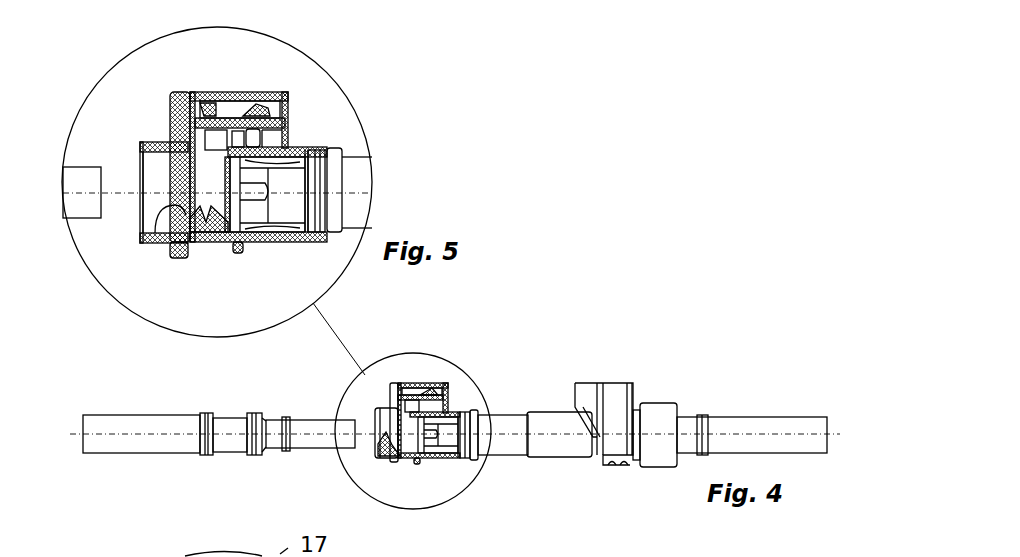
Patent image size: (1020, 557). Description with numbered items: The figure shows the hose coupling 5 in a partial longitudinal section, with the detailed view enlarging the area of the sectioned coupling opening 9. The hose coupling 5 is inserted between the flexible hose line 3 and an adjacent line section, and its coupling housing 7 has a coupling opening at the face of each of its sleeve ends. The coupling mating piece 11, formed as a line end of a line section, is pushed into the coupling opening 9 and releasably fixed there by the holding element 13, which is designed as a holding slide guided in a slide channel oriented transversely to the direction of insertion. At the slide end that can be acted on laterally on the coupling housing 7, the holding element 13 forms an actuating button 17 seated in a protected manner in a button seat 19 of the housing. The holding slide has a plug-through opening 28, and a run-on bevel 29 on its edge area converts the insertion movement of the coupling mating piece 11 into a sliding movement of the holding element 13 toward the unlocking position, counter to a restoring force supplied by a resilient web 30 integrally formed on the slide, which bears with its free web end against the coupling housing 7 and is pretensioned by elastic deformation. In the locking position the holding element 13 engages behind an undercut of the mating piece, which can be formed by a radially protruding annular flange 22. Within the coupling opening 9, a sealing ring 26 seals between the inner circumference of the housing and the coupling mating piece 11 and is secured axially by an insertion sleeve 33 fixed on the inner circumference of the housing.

In FIG. 4, the flexible hose line 3 is at (138, 455).
In FIG. 5, the hose coupling 5 is at (322, 100).
In FIG. 4, the hose coupling 5 is at (528, 382).
In FIG. 4, the coupling housing 7 is at (510, 457).
In FIG. 5, the coupling opening 9 is at (128, 165).
In FIG. 4, the coupling opening 9 is at (352, 405).
In FIG. 5, the coupling mating piece 11 is at (85, 212).
In FIG. 4, the coupling mating piece 11 is at (318, 448).
In FIG. 5, the holding element 13 is at (168, 110).
In FIG. 4, the holding element 13 is at (380, 417).
In FIG. 5, the actuating button 17 is at (230, 96).
In FIG. 4, the actuating button 17 is at (418, 388).
In FIG. 5, the button seat 19 is at (292, 120).
In FIG. 4, the button seat 19 is at (402, 408).
In FIG. 4, the annular flange 22 is at (285, 417).
In FIG. 5, the sealing ring 26 is at (312, 230).
In FIG. 4, the sealing ring 26 is at (462, 412).
In FIG. 5, the plug-through opening 28 is at (206, 232).
In FIG. 5, the run-on bevel 29 is at (170, 226).
In FIG. 4, the run-on bevel 29 is at (385, 458).
In FIG. 5, the resilient web 30 is at (250, 116).
In FIG. 4, the resilient web 30 is at (432, 393).
In FIG. 5, the insertion sleeve 33 is at (285, 232).
In FIG. 4, the insertion sleeve 33 is at (438, 458).